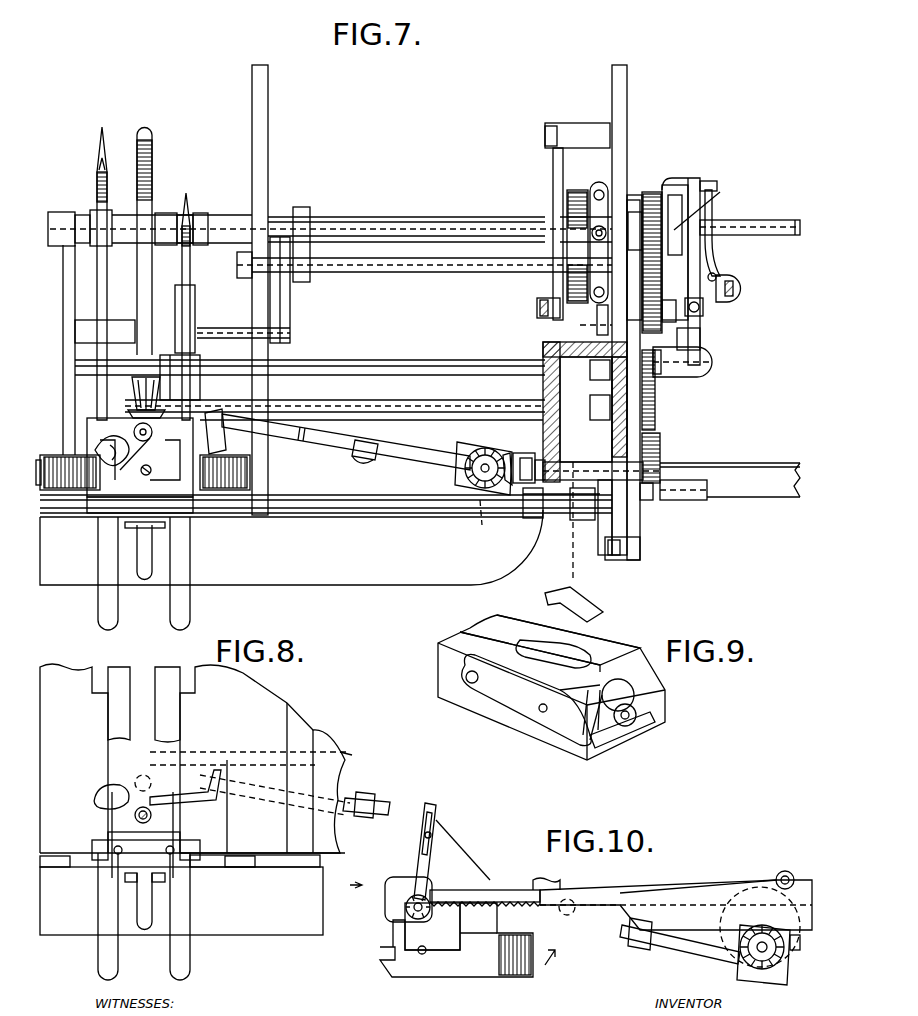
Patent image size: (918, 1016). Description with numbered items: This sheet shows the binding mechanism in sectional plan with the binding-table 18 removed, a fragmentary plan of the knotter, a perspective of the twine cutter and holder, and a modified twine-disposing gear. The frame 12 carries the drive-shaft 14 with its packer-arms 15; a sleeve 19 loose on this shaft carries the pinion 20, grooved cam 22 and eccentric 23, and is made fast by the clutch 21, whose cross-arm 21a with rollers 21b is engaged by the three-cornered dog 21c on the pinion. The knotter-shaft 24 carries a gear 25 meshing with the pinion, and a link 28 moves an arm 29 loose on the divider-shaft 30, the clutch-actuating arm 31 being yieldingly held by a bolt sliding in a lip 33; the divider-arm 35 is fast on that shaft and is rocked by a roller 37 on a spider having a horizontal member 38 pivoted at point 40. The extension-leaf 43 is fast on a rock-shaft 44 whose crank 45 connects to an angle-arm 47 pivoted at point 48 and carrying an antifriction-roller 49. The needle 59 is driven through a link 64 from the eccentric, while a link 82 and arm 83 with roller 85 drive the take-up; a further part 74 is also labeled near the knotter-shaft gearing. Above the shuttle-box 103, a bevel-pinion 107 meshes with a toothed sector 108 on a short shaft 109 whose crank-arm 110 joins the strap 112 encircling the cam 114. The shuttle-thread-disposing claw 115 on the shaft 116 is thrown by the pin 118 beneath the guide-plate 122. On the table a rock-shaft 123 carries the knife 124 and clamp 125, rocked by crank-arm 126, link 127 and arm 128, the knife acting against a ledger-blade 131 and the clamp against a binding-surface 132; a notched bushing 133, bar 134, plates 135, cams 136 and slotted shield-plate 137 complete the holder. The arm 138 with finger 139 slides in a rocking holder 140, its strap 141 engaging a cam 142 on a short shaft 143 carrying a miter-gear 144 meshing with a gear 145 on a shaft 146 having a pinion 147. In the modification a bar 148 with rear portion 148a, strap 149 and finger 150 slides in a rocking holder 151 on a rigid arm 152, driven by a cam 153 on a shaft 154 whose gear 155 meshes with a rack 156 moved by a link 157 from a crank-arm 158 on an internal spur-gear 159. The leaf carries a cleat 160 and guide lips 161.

In FIG. 7, the frame 12 is at (546, 350).
In FIG. 7, the drive-shaft 14 is at (745, 225).
In FIG. 7, the packer-arms 15 is at (102, 300).
In FIG. 8, the binding-table 18 is at (192, 758).
In FIG. 9, the binding-table 18 is at (551, 687).
In FIG. 7, the sleeve 19 is at (634, 215).
In FIG. 7, the pinion 20 is at (652, 195).
In FIG. 7, the clutch 21 is at (675, 185).
In FIG. 7, the cross-arm 21a is at (710, 207).
In FIG. 7, the rollers 21b is at (722, 276).
In FIG. 7, the three-cornered dog 21c is at (717, 186).
In FIG. 7, the grooved cam 22 is at (575, 192).
In FIG. 7, the eccentric 23 is at (598, 185).
In FIG. 7, the knotter-shaft 24 is at (508, 258).
In FIG. 7, the gear 25 is at (670, 316).
In FIG. 7, the link 28 is at (715, 250).
In FIG. 7, the arm 29 is at (712, 356).
In FIG. 7, the divider-shaft 30 is at (472, 368).
In FIG. 7, the clutch-actuating arm 31 is at (694, 182).
In FIG. 7, the lip 33 is at (703, 308).
In FIG. 7, the divider-arm 35 is at (153, 282).
In FIG. 7, the roller 37 is at (656, 415).
In FIG. 7, the horizontal member 38 is at (677, 338).
In FIG. 7, the pivot 40 is at (593, 333).
In FIG. 7, the extension-leaf 43 is at (291, 570).
In FIG. 8, the extension-leaf 43 is at (192, 916).
In FIG. 7, the rock-shaft 44 is at (560, 505).
In FIG. 8, the rock-shaft 44 is at (210, 867).
In FIG. 7, the crank 45 is at (604, 545).
In FIG. 7, the angle-arm 47 is at (635, 545).
In FIG. 7, the pivot point 48 is at (600, 440).
In FIG. 7, the antifriction-roller 49 is at (648, 500).
In FIG. 7, the needle 59 is at (140, 476).
In FIG. 10, the needle 59 is at (422, 955).
In FIG. 7, the link 64 is at (640, 190).
In FIG. 7, the collar 74 is at (597, 312).
In FIG. 7, the link 82 is at (537, 312).
In FIG. 7, the arm 83 is at (553, 285).
In FIG. 7, the antifriction-roller 85 is at (590, 236).
In FIG. 7, the shuttle-box 103 is at (40, 468).
In FIG. 7, the bevel-pinion 107 is at (135, 385).
In FIG. 7, the toothed sector 108 is at (200, 390).
In FIG. 7, the short shaft 109 is at (222, 333).
In FIG. 7, the crank-arm 110 is at (288, 306).
In FIG. 7, the strap 112 is at (300, 250).
In FIG. 7, the cam 114 is at (395, 248).
In FIG. 7, the shuttle-thread-disposing claw 115 is at (100, 500).
In FIG. 7, the shaft 116 is at (152, 438).
In FIG. 7, the pin 118 is at (108, 436).
In FIG. 7, the guide-plate 122 is at (162, 475).
In FIG. 10, the guide-plate 122 is at (450, 972).
In FIG. 8, the rock-shaft 123 is at (195, 790).
In FIG. 9, the rock-shaft 123 is at (628, 726).
In FIG. 9, the knife 124 is at (634, 693).
In FIG. 9, the clamp 125 is at (600, 668).
In FIG. 7, the crank-arm 126 is at (133, 412).
In FIG. 8, the crank-arm 126 is at (140, 770).
In FIG. 7, the link 127 is at (345, 390).
In FIG. 8, the link 127 is at (218, 752).
In FIG. 7, the arm 128 is at (596, 405).
In FIG. 9, the ledger-blade 131 is at (575, 750).
In FIG. 9, the binding-surface 132 is at (600, 732).
In FIG. 9, the notched bushing 133 is at (520, 680).
In FIG. 9, the bar 134 is at (572, 712).
In FIG. 9, the plates 135 is at (665, 678).
In FIG. 7, the cams 136 is at (190, 510).
In FIG. 8, the cams 136 is at (195, 848).
In FIG. 9, the slotted shield-plate 137 is at (612, 650).
In FIG. 7, the arm 138 is at (330, 445).
In FIG. 8, the arm 138 is at (388, 802).
In FIG. 9, the arm 138 is at (595, 608).
In FIG. 10, the arm 138 is at (675, 955).
In FIG. 7, the finger 139 is at (224, 436).
In FIG. 8, the finger 139 is at (195, 810).
In FIG. 7, the rocking holder 140 is at (378, 446).
In FIG. 8, the rocking holder 140 is at (363, 818).
In FIG. 10, the rocking holder 140 is at (640, 950).
In FIG. 7, the strap 141 is at (455, 490).
In FIG. 7, the cam 142 is at (478, 522).
In FIG. 7, the short shaft 143 is at (523, 455).
In FIG. 10, the short shaft 143 is at (745, 958).
In FIG. 7, the miter-gear 144 is at (482, 458).
In FIG. 7, the miter-gear 145 is at (511, 462).
In FIG. 7, the shaft 146 is at (556, 521).
In FIG. 7, the pinion 147 is at (662, 450).
In FIG. 10, the bar 148 is at (432, 868).
In FIG. 10, the rear portion 148a is at (463, 841).
In FIG. 10, the strap 149 is at (455, 890).
In FIG. 10, the finger 150 is at (417, 941).
In FIG. 10, the rocking holder 151 is at (432, 842).
In FIG. 10, the rigid arm 152 is at (450, 848).
In FIG. 10, the cam 153 is at (390, 915).
In FIG. 10, the shaft 154 is at (430, 911).
In FIG. 10, the gear 155 is at (433, 926).
In FIG. 10, the rack 156 is at (490, 900).
In FIG. 10, the link 157 is at (705, 890).
In FIG. 10, the crank-arm 158 is at (790, 905).
In FIG. 10, the internal spur-gear 159 is at (780, 873).
In FIG. 7, the cleat 160 is at (145, 578).
In FIG. 8, the cleat 160 is at (140, 912).
In FIG. 10, the cleat 160 is at (802, 963).
In FIG. 8, the lips 161 is at (128, 880).